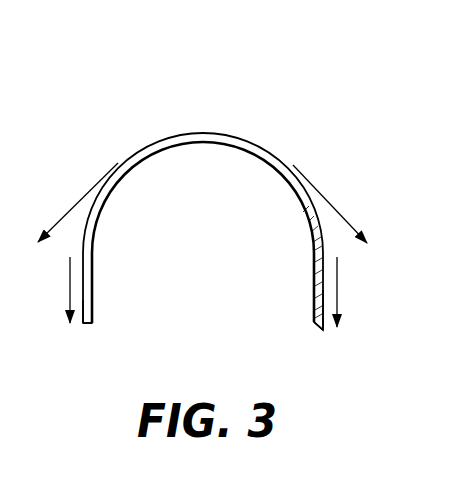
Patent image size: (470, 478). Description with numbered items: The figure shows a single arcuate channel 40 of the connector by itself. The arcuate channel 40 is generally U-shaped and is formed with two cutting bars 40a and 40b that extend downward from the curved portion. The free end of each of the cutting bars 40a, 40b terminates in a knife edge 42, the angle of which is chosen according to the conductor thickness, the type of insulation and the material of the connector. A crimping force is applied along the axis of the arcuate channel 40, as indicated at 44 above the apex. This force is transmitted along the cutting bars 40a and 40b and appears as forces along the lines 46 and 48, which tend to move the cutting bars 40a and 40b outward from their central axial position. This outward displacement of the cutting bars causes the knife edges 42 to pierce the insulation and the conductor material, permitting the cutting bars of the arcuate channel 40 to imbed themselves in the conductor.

The arcuate channel 40 is at (210, 168).
The cutting bar 40a is at (93, 302).
The cutting bar 40b is at (313, 290).
The knife edge 42 is at (92, 322).
The crimping force 44 is at (204, 133).
The force line 46 is at (78, 194).
The force line 48 is at (346, 221).